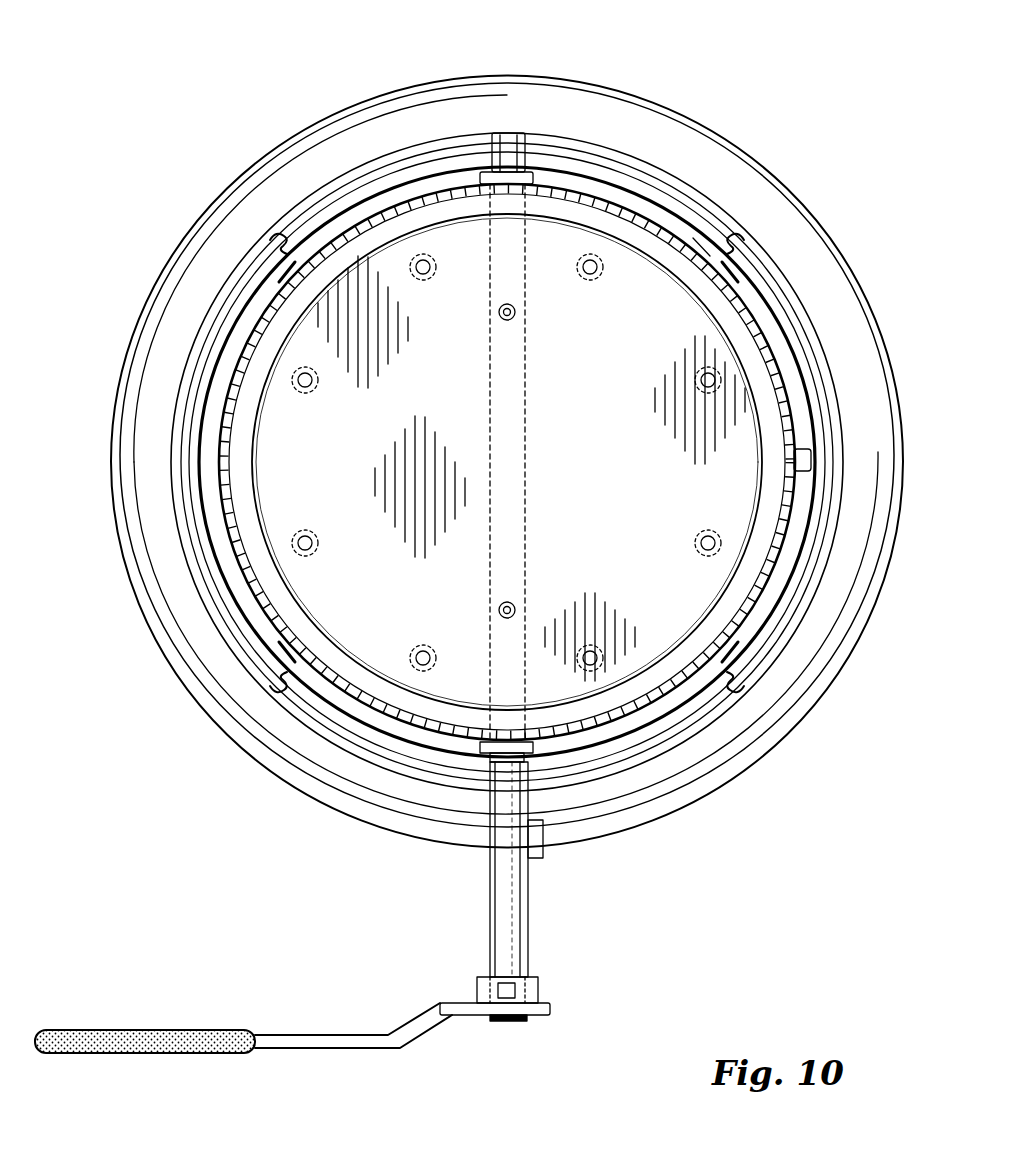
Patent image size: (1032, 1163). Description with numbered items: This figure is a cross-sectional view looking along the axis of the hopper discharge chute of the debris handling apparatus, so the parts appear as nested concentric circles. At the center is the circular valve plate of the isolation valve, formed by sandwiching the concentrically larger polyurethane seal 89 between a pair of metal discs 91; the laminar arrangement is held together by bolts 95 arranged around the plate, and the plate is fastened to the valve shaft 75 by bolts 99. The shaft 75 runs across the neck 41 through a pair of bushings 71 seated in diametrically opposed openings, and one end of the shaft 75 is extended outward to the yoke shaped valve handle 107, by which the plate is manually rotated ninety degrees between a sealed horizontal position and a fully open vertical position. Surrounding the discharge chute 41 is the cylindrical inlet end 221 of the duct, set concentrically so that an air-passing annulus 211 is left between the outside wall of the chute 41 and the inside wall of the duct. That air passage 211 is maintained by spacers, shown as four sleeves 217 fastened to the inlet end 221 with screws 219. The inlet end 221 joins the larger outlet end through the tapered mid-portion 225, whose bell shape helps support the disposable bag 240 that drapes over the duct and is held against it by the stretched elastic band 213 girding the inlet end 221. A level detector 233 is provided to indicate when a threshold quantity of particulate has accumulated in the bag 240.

The neck 41 is at (652, 226).
The bushings 71 is at (474, 165).
The shaft 75 is at (525, 914).
The polyurethane seal 89 is at (257, 372).
The metal discs 91 is at (284, 426).
The bolts 95 is at (696, 531).
The bolts 99 is at (520, 605).
The valve handle 107 is at (92, 1030).
The air passage 211 is at (212, 464).
The elastic band 213 is at (422, 150).
The sleeves 217 is at (745, 266).
The screws 219 is at (270, 235).
The inlet end 221 is at (360, 195).
The tapered mid-portion 225 is at (585, 122).
The level detector 233 is at (544, 855).
The disposable bag 240 is at (665, 95).